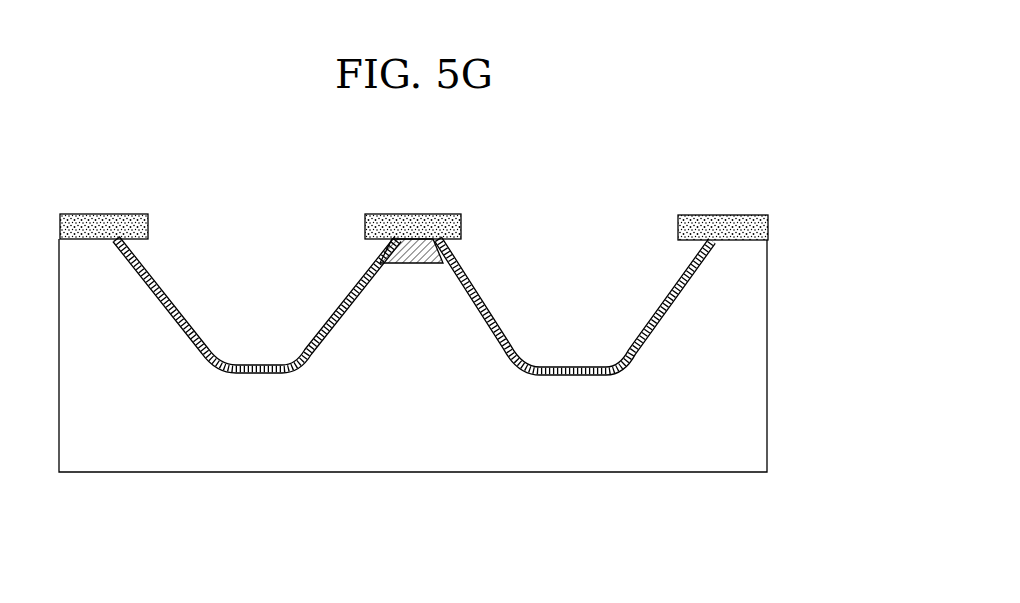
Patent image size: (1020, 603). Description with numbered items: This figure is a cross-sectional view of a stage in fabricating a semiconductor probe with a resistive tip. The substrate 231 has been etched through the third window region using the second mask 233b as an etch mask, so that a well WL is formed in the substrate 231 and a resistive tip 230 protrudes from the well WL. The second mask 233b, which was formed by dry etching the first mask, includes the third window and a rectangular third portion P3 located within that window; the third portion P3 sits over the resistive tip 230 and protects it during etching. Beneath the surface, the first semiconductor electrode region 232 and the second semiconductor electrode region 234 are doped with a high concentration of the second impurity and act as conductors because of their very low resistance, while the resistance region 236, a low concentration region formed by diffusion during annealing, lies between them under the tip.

The resistive tip 230 is at (414, 348).
The substrate 231 is at (766, 362).
The first semiconductor electrode region 232 is at (252, 374).
The second mask 233b is at (728, 222).
The second semiconductor electrode region 234 is at (568, 376).
The resistance region 236 is at (411, 263).
The third portion P3 is at (413, 225).
The well WL is at (242, 304).